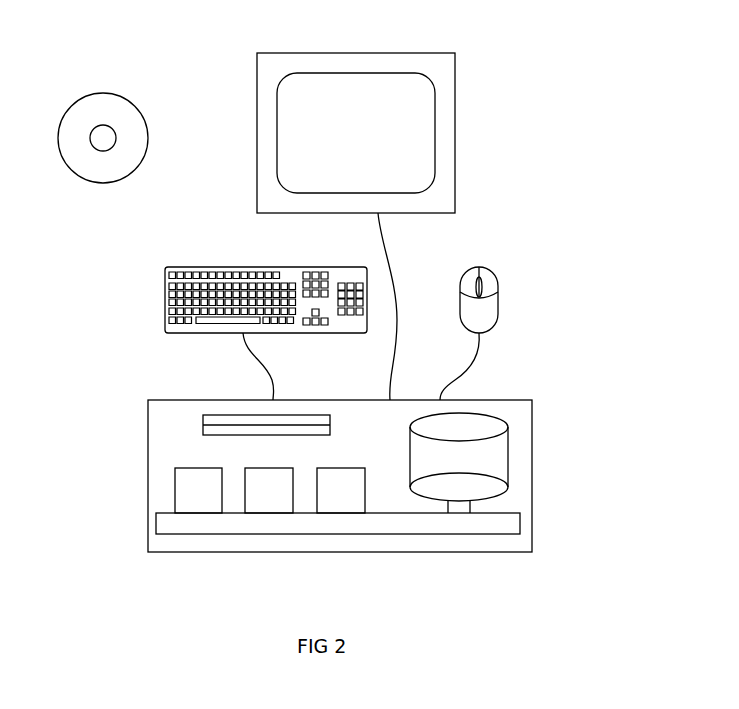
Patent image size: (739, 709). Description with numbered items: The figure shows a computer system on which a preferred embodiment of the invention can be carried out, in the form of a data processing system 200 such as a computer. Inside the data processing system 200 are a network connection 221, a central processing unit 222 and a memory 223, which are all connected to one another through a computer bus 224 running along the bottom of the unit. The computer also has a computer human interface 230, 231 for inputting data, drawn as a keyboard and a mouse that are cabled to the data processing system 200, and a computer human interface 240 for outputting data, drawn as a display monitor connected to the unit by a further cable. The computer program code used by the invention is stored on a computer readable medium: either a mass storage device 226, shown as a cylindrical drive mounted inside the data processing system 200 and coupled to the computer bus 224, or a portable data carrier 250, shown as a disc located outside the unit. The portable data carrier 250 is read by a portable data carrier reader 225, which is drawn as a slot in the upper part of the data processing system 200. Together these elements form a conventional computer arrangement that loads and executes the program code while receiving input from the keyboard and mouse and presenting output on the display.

The data processing system 200 is at (532, 432).
The network connection 221 is at (197, 490).
The central processing unit 222 is at (263, 490).
The memory 223 is at (335, 490).
The computer bus 224 is at (517, 523).
The portable data carrier reader 225 is at (203, 419).
The mass storage device 226 is at (502, 472).
The computer human interface 230 is at (185, 267).
The computer human interface 231 is at (498, 300).
The computer human interface 240 is at (455, 118).
The portable data carrier 250 is at (78, 97).